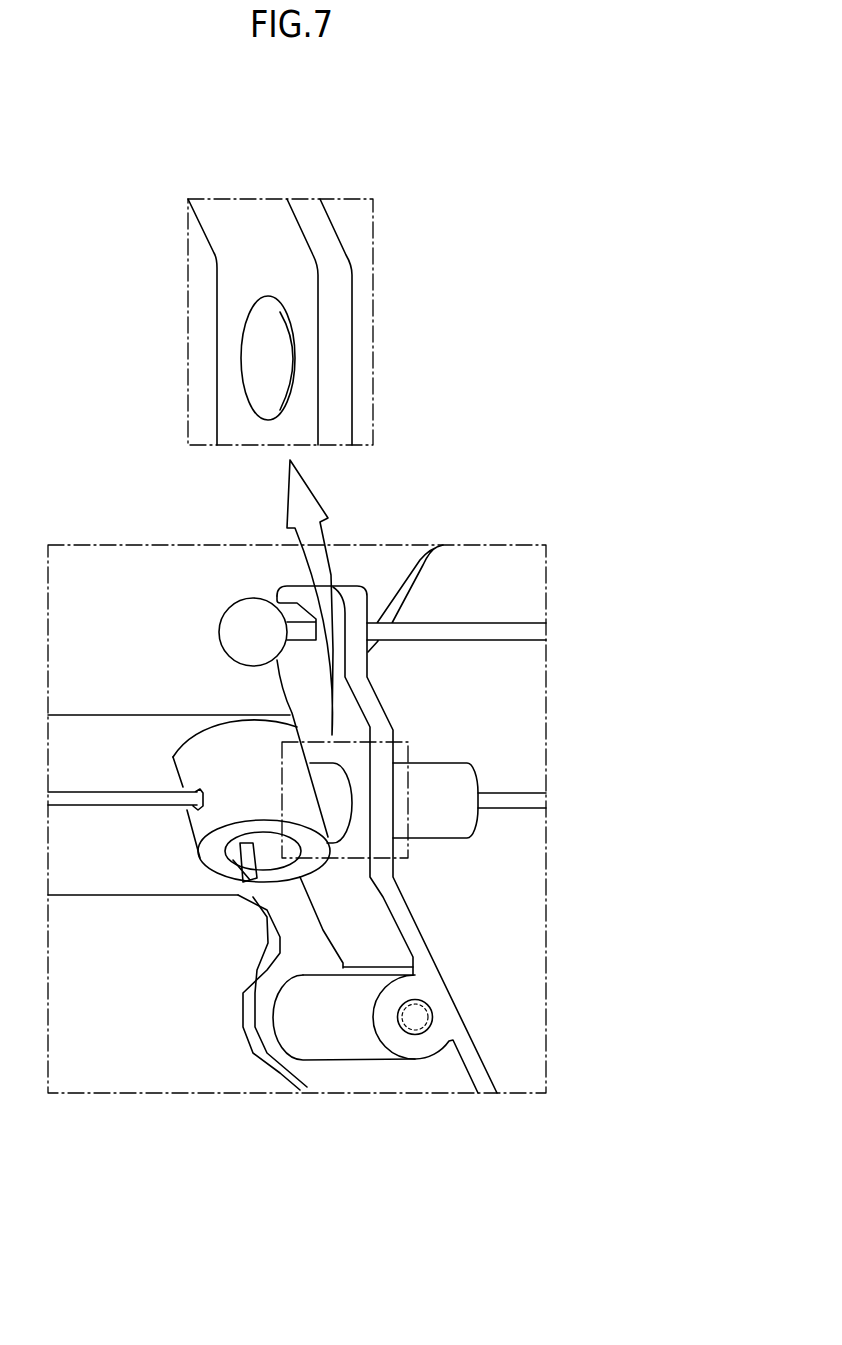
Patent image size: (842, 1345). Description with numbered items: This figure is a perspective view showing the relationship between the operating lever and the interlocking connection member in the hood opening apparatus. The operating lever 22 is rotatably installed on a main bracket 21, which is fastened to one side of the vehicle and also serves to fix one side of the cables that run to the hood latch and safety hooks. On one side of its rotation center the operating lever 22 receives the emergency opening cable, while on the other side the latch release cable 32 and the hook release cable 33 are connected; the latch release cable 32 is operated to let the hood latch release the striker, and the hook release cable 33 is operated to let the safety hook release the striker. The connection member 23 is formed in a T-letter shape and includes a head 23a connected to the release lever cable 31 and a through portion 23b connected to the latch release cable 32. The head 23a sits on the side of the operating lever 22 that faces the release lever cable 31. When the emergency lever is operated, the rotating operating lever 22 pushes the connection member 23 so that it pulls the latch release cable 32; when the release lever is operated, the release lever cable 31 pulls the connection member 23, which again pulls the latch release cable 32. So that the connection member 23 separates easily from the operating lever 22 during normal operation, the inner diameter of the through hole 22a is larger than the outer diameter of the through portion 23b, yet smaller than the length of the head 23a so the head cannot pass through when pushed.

The main bracket 21 is at (512, 872).
The operating lever 22 is at (404, 641).
The through hole 22a is at (282, 348).
The connection member 23 is at (325, 968).
The head 23a is at (247, 797).
The through portion 23b is at (440, 808).
The release lever cable 31 is at (113, 798).
The latch release cable 32 is at (505, 798).
The hook release cable 33 is at (476, 633).